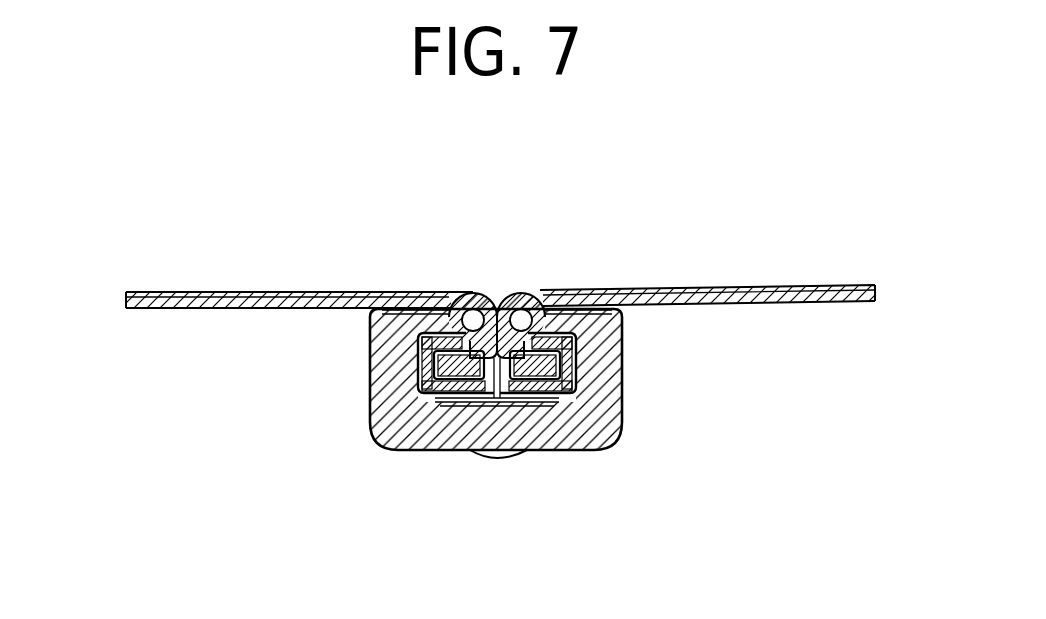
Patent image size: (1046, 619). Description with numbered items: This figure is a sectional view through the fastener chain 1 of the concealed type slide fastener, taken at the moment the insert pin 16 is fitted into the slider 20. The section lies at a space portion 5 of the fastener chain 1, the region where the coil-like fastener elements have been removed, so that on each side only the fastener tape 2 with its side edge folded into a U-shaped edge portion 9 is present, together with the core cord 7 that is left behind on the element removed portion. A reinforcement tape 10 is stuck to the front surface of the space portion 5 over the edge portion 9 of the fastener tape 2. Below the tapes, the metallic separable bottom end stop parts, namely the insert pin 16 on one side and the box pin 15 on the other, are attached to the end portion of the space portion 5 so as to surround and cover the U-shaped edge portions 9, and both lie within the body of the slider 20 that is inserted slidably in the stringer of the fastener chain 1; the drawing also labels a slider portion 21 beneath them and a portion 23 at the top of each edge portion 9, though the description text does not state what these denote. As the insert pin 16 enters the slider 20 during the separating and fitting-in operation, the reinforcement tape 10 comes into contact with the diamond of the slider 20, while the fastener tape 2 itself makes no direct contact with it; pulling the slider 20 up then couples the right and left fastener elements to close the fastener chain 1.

The fastener chain 1 is at (503, 292).
The fastener tape 2 is at (265, 312).
The space portion 5 is at (642, 291).
The core cord 7 is at (590, 362).
The edge portion 9 is at (467, 293).
The reinforcement tape 10 is at (242, 293).
The box pin 15 is at (590, 383).
The insert pin 16 is at (417, 400).
The slider 20 is at (538, 452).
The bottom plate 21 is at (484, 428).
The clip band 23 is at (440, 292).